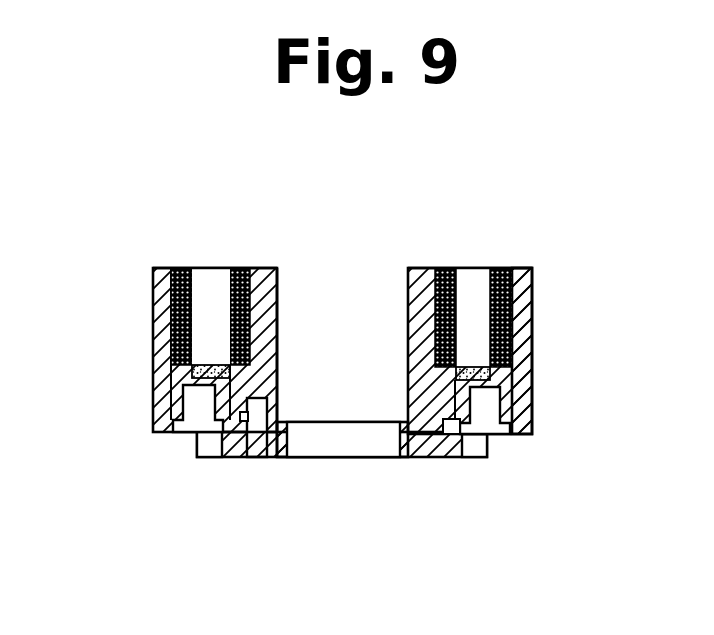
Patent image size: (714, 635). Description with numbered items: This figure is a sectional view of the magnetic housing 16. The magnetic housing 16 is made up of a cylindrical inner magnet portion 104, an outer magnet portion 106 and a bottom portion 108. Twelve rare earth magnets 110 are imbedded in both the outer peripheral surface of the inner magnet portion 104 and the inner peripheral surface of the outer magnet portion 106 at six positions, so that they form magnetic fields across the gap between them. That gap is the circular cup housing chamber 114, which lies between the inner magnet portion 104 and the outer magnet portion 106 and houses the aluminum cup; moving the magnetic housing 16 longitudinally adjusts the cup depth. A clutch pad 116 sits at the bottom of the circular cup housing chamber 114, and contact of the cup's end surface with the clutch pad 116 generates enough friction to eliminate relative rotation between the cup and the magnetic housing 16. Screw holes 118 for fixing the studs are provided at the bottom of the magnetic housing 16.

The magnetic housing 16 is at (537, 149).
The inner magnet portion 104 is at (424, 278).
The outer magnet portion 106 is at (517, 303).
The bottom portion 108 is at (437, 443).
The rare earth magnets 110 is at (452, 270).
The circular cup housing chamber 114 is at (207, 283).
The clutch pad 116 is at (212, 365).
The screw holes 118 is at (193, 420).